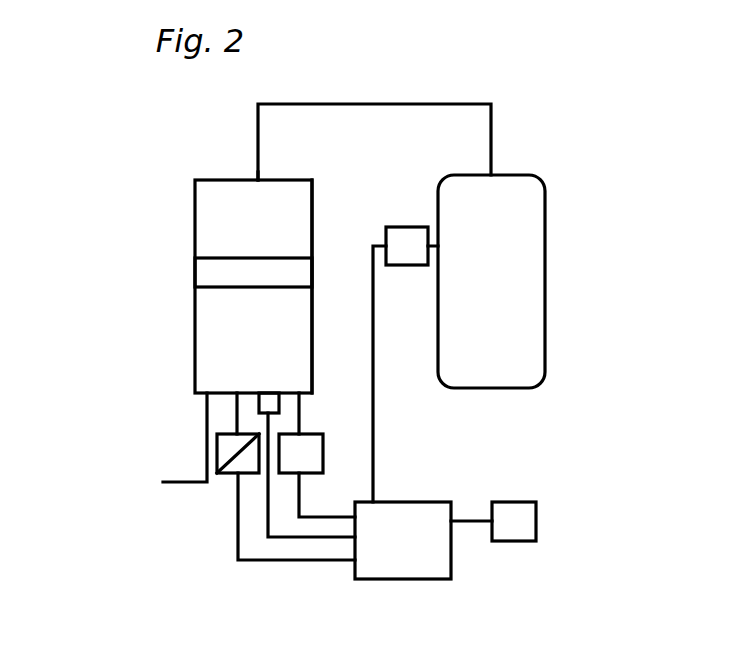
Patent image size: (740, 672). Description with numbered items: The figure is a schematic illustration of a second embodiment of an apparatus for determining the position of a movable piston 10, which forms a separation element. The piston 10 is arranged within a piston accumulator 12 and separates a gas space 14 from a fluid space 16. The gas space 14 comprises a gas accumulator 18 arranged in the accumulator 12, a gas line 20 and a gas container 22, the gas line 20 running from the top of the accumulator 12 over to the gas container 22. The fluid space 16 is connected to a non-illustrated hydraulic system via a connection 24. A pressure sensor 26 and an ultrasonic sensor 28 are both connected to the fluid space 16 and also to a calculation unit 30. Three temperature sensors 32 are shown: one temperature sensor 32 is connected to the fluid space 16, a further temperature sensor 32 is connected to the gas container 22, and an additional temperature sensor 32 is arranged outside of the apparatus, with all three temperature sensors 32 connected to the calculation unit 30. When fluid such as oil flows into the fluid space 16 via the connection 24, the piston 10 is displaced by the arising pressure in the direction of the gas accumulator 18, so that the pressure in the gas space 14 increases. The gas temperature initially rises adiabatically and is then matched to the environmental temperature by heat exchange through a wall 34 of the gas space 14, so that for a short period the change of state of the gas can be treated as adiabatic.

The piston 10 is at (217, 278).
The piston accumulator 12 is at (193, 208).
The gas space 14 is at (242, 167).
The fluid space 16 is at (228, 357).
The gas accumulator 18 is at (249, 211).
The gas line 20 is at (367, 102).
The gas container 22 is at (545, 187).
The connection 24 is at (185, 482).
The pressure sensor 26 is at (218, 472).
The ultrasonic sensor 28 is at (260, 405).
The calculation unit 30 is at (378, 579).
The temperature sensors 32 is at (408, 265).
The wall 34 is at (313, 197).